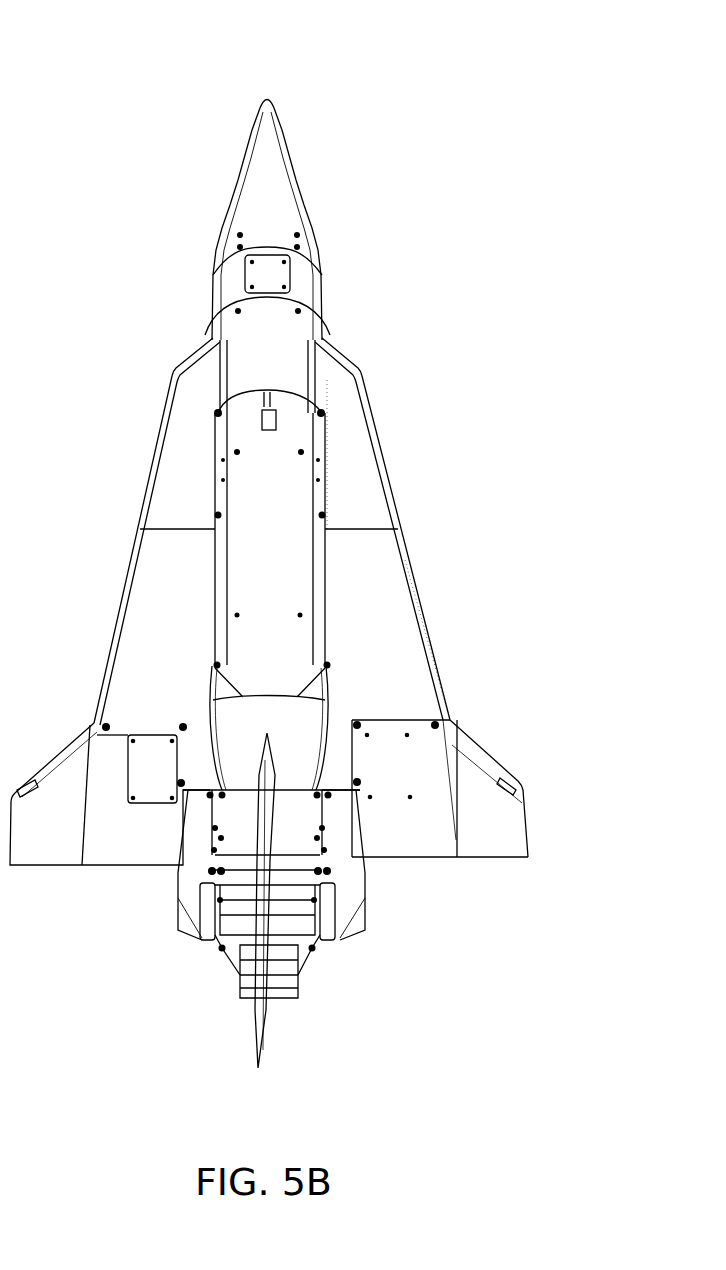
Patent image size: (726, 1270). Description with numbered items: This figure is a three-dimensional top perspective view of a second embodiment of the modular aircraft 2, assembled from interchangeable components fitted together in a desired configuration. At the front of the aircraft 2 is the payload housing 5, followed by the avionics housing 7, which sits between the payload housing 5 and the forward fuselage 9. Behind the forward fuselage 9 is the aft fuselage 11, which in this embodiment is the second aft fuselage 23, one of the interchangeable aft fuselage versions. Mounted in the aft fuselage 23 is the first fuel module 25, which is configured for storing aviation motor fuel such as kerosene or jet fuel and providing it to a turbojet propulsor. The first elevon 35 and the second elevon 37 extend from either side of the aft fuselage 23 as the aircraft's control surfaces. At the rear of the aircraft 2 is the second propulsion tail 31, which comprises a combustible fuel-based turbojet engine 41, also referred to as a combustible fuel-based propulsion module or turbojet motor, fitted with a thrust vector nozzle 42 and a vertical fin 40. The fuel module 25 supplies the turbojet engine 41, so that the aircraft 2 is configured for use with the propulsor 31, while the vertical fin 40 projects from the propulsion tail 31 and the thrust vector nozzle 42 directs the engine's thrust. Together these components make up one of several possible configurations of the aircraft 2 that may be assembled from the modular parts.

The aircraft 2 is at (162, 57).
The payload housing 5 is at (281, 157).
The avionics housing 7 is at (300, 290).
The forward fuselage 9 is at (348, 410).
The aft fuselage 11 is at (432, 597).
The second aft fuselage 23 is at (412, 657).
The first fuel module 25 is at (277, 498).
The second propulsion tail 31 is at (193, 892).
The first elevon 35 is at (50, 843).
The second elevon 37 is at (497, 835).
The vertical fin 40 is at (265, 1043).
The combustible fuel-based turbojet engine 41 is at (218, 968).
The thrust vector nozzle 42 is at (240, 990).